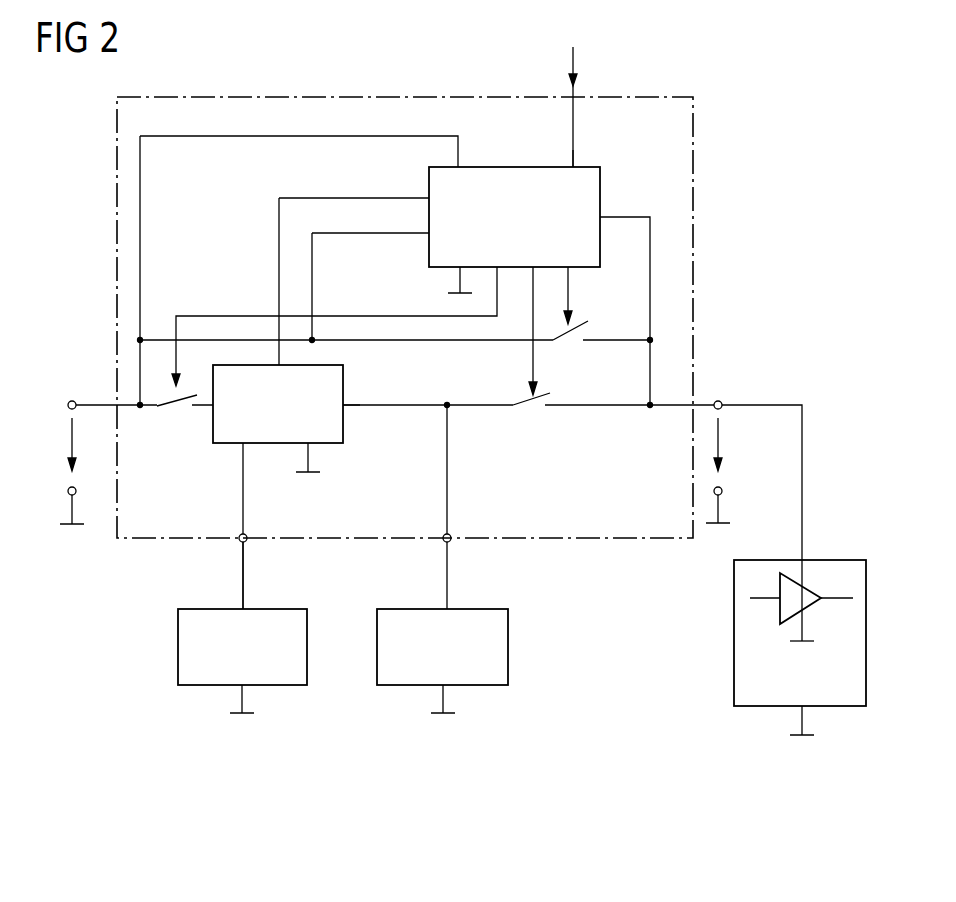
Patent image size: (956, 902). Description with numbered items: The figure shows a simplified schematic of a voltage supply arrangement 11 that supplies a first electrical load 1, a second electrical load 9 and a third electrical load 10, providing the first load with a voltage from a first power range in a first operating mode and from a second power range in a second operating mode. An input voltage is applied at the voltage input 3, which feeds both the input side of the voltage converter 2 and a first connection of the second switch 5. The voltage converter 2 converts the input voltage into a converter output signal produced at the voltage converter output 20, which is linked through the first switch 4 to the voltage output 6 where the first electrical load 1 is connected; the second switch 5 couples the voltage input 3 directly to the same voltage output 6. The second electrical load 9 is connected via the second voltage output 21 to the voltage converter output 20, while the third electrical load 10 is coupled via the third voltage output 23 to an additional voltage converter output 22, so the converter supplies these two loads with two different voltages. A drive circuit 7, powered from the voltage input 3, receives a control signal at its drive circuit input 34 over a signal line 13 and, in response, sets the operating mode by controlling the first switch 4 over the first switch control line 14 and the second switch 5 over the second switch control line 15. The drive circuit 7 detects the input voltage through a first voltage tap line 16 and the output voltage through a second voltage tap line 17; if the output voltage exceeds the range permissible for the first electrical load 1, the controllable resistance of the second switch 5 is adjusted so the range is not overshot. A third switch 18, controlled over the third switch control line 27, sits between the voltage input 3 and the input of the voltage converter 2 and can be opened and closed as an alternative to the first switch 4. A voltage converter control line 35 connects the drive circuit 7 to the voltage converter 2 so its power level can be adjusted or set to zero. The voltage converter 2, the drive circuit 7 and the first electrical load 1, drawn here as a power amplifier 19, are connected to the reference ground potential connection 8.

The first electrical load 1 is at (734, 632).
The voltage converter 2 is at (343, 388).
The voltage input 3 is at (74, 393).
The first switch 4 is at (528, 410).
The second switch 5 is at (560, 332).
The voltage output 6 is at (722, 393).
The drive circuit 7 is at (516, 167).
The reference ground potential connection 8 is at (455, 290).
The second electrical load 9 is at (377, 648).
The third electrical load 10 is at (178, 650).
The voltage supply arrangement 11 is at (397, 96).
The signal line 13 is at (568, 72).
The first switch control line 14 is at (535, 370).
The second switch control line 15 is at (570, 296).
The first voltage tap line 16 is at (314, 284).
The second voltage tap line 17 is at (625, 217).
The third switch 18 is at (172, 412).
The power amplifier 19 is at (810, 614).
The voltage converter output 20 is at (345, 413).
The second voltage output 21 is at (452, 545).
The additional voltage converter output 22 is at (245, 450).
The third voltage output 23 is at (249, 545).
The third switch control line 27 is at (232, 316).
The drive circuit input 34 is at (572, 161).
The voltage converter control line 35 is at (350, 198).